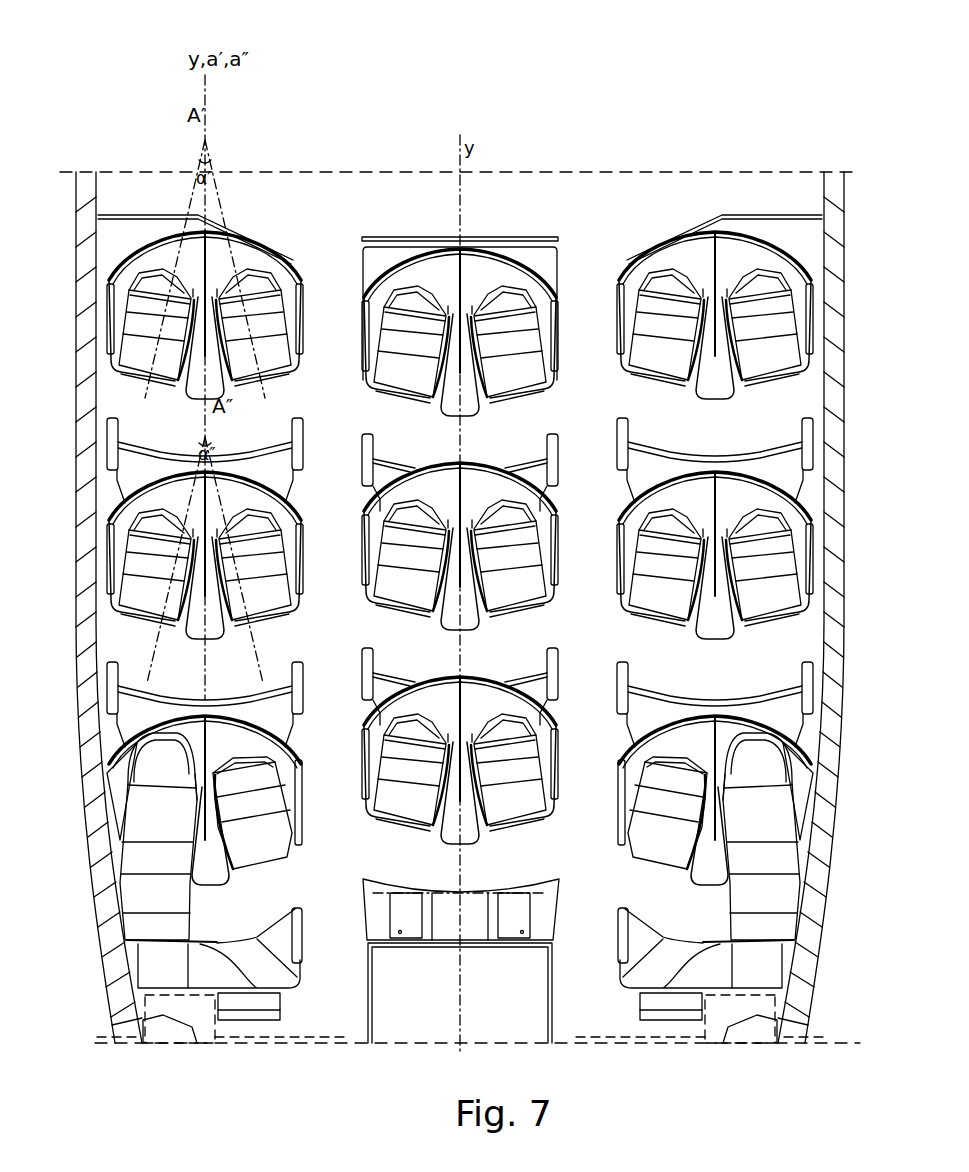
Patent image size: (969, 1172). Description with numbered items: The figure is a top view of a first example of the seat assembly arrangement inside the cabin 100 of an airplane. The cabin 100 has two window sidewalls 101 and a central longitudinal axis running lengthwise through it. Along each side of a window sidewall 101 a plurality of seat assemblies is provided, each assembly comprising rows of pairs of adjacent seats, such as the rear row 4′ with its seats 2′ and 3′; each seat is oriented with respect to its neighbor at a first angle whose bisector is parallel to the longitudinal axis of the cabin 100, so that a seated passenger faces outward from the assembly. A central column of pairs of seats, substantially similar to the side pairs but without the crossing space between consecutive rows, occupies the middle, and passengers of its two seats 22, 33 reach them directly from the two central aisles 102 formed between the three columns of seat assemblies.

The cabin 100 is at (637, 82).
The window sidewall 101 is at (80, 330).
The central aisle 102 is at (330, 268).
The seat 2′ is at (132, 296).
The seat 3′ is at (277, 338).
The first row 4′ is at (181, 307).
The seat 22 is at (386, 370).
The seat 33 is at (533, 372).